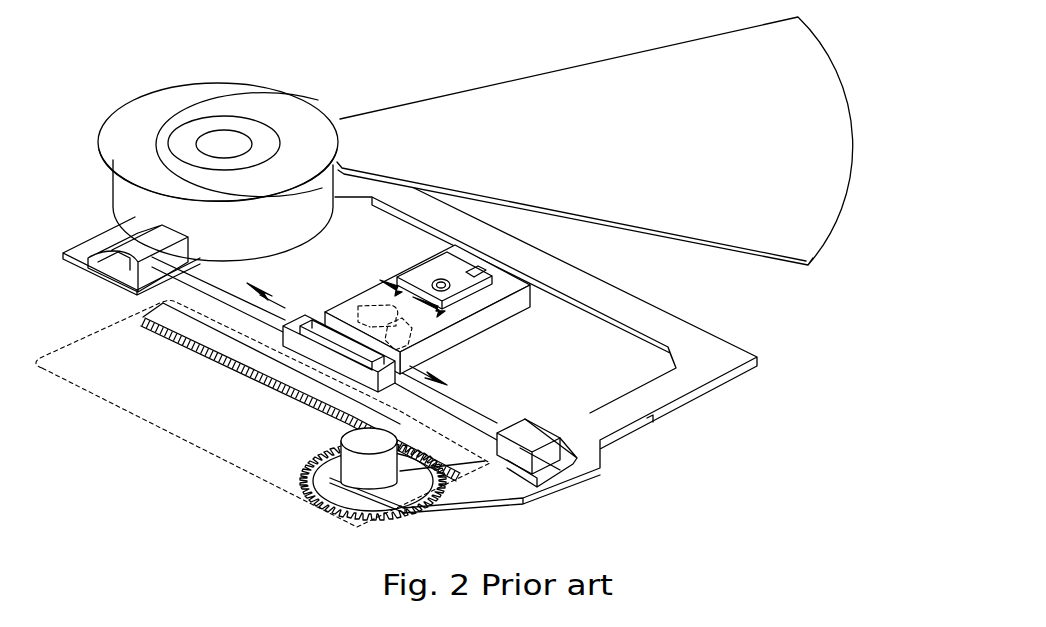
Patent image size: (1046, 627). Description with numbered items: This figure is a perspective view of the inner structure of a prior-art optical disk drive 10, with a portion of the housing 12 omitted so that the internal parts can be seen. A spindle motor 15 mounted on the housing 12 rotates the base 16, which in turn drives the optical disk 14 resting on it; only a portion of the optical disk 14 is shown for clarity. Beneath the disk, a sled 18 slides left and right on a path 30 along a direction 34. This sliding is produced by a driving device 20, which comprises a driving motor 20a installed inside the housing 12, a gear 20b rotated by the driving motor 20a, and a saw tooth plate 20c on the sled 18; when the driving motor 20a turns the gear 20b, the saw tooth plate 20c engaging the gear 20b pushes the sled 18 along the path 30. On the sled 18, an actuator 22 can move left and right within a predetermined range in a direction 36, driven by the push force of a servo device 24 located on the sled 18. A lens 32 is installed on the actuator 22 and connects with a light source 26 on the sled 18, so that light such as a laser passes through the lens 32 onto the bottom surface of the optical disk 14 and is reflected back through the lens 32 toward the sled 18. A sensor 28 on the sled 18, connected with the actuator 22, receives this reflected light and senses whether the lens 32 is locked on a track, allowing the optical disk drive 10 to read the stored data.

The optical disk drive 10 is at (466, 280).
The housing 12 is at (672, 387).
The optical disk 14 is at (808, 158).
The spindle motor 15 is at (112, 208).
The base 16 is at (230, 120).
The sled 18 is at (455, 243).
The driving device 20 is at (205, 455).
The driving motor 20a is at (395, 460).
The gear 20b is at (322, 457).
The saw tooth plate 20c is at (212, 338).
The actuator 22 is at (432, 280).
The servo device 24 is at (490, 285).
The light source 26 is at (362, 312).
The sensor 28 is at (420, 347).
The path 30 is at (483, 433).
The lens 32 is at (480, 275).
The direction 34 is at (362, 330).
The direction 36 is at (385, 290).